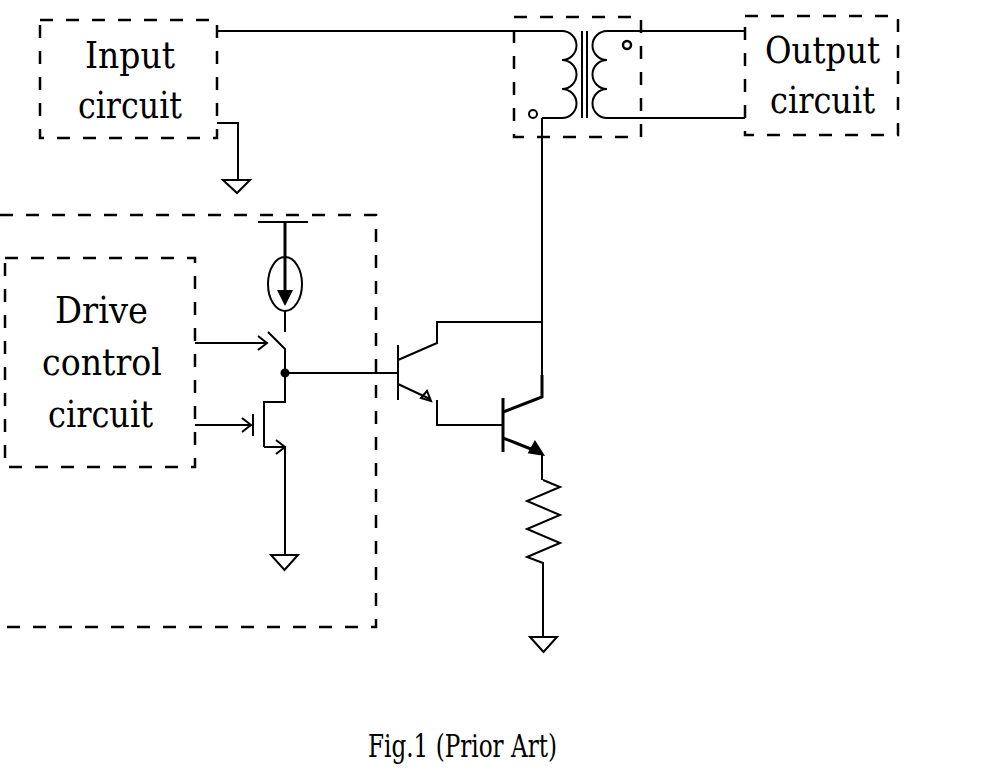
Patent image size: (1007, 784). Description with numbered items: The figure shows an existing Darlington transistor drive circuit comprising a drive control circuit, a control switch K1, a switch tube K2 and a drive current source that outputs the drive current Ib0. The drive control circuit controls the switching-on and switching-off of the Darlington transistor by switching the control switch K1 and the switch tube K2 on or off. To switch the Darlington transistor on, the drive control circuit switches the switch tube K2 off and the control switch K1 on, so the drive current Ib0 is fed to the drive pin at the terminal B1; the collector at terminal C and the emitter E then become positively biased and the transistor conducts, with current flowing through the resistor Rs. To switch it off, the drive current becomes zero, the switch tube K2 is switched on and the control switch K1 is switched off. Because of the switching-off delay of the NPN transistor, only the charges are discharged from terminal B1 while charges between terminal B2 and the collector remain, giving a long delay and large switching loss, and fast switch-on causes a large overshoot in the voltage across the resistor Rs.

The drive current Ib0 is at (300, 277).
The control switch K1 is at (242, 347).
The switch tube K2 is at (246, 471).
The terminal B1 is at (413, 373).
The terminal B2 is at (502, 422).
The terminal C is at (558, 246).
The emitter E is at (557, 458).
The resistor Rs is at (562, 566).